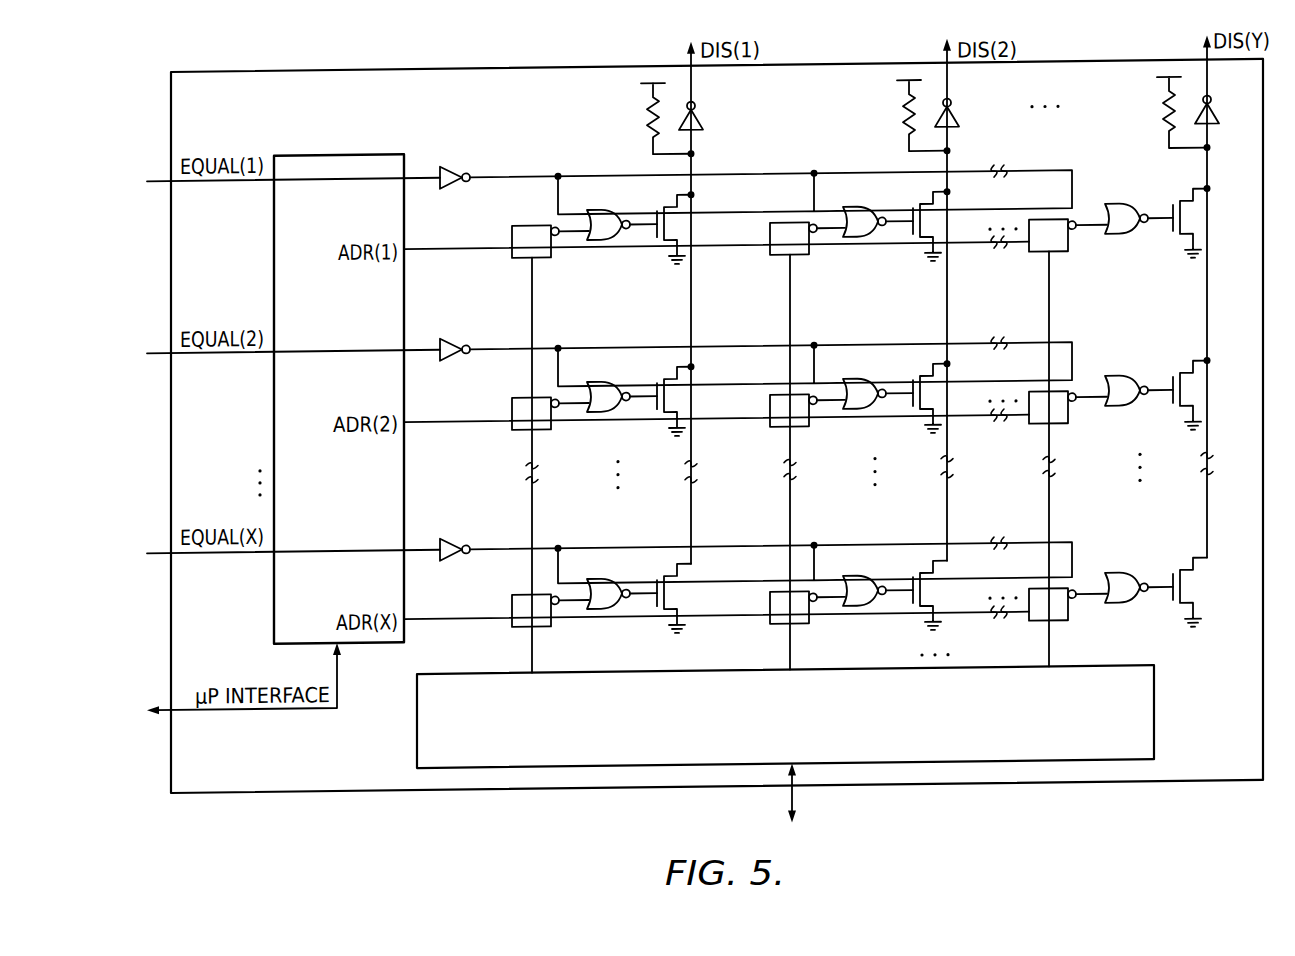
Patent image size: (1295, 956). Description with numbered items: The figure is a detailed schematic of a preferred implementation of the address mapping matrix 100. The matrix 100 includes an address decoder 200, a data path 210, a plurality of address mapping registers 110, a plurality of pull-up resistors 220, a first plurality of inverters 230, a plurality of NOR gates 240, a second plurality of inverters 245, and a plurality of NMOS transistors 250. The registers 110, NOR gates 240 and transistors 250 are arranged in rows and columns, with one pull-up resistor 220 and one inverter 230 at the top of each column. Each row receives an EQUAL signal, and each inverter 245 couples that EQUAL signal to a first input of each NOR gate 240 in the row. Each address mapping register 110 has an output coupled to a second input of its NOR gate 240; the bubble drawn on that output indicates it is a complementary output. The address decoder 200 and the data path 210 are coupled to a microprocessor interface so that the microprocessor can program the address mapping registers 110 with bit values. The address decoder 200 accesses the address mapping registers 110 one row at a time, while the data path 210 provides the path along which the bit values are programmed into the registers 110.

The address mapping matrix 100 is at (844, 72).
The address mapping register 110 is at (1075, 647).
The address decoder 200 is at (356, 157).
The data path 210 is at (1121, 677).
The pull-up resistor 220 is at (1163, 125).
The inverter 230 is at (700, 126).
The NOR gate 240 is at (1129, 583).
The inverter 245 is at (448, 170).
The NMOS transistor 250 is at (1204, 599).